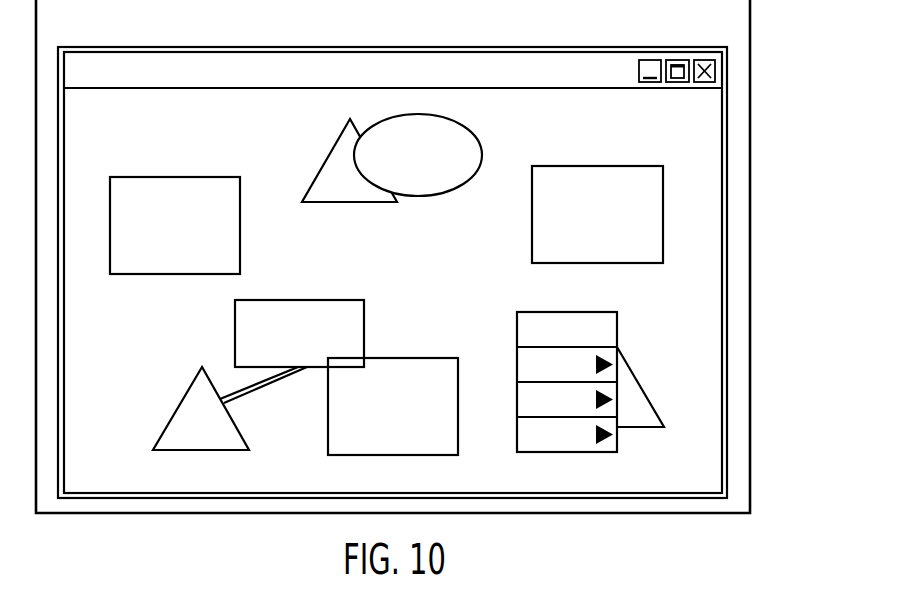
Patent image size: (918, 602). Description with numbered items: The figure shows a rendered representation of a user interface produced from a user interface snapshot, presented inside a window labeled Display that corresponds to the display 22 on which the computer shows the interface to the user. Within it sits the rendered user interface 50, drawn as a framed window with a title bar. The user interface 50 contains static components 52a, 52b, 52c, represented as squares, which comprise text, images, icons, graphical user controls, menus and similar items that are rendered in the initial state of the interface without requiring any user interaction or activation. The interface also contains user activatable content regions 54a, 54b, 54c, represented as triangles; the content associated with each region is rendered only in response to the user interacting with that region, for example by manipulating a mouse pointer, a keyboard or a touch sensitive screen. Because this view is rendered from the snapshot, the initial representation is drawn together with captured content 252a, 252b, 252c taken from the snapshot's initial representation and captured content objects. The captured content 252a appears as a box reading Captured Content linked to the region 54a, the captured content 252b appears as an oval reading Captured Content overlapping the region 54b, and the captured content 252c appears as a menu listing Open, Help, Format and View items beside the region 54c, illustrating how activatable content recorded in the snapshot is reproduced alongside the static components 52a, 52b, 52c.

The display 22 is at (750, 24).
The rendered user interface 50 is at (729, 152).
The static component 52a is at (175, 177).
The static component 52b is at (642, 164).
The static component 52c is at (427, 358).
The user activatable content region 54a is at (184, 395).
The user activatable content region 54b is at (336, 143).
The user activatable content region 54c is at (638, 380).
The captured content 252a is at (325, 299).
The captured content 252b is at (473, 133).
The captured content 252c is at (618, 330).